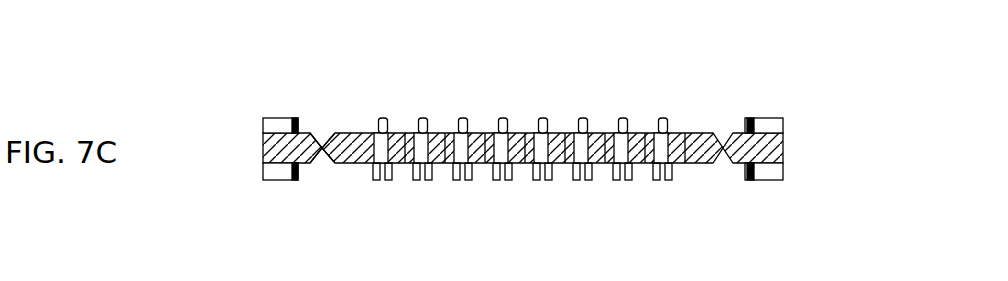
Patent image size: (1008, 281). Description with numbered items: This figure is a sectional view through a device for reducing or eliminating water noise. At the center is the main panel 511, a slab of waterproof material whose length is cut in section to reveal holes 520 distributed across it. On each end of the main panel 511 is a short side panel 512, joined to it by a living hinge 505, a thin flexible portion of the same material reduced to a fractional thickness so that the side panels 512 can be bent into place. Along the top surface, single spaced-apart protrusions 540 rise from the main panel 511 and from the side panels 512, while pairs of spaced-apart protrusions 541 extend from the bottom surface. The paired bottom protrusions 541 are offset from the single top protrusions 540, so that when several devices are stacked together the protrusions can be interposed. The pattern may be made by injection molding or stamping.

The living hinge 505 is at (314, 193).
The main panel 511 is at (695, 137).
The side panel 512 is at (782, 138).
The holes 520 is at (398, 133).
The single spaced-apart protrusions 540 is at (538, 133).
The pairs of spaced-apart protrusions 541 is at (538, 180).